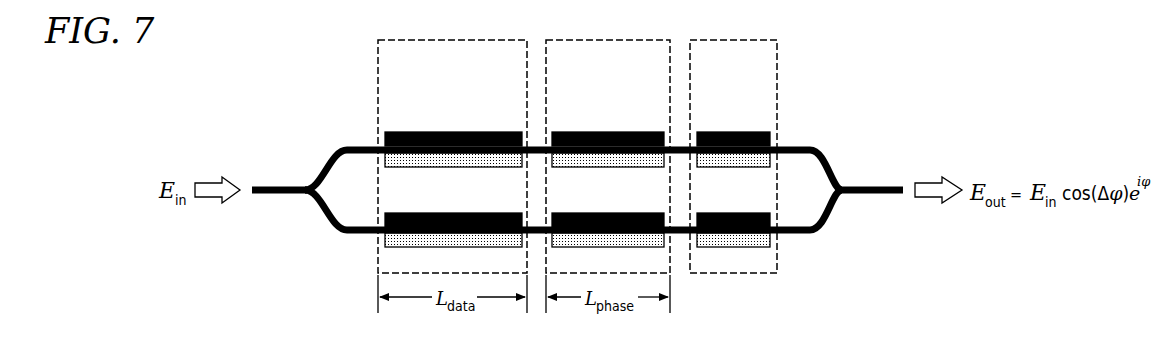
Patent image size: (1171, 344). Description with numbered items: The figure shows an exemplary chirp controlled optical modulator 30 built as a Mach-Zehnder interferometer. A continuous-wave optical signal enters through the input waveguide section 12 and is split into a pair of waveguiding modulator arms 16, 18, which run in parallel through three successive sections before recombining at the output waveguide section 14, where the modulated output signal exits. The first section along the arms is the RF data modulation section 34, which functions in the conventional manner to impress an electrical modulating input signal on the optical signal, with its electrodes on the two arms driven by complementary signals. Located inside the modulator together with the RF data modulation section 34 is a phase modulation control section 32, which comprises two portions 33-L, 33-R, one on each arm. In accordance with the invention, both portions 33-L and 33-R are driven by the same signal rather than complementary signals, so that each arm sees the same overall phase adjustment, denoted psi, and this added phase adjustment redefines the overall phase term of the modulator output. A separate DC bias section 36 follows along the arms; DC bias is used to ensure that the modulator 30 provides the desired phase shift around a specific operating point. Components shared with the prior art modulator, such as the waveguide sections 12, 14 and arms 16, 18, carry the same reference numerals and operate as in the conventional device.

The input waveguide section 12 is at (272, 186).
The output waveguide section 14 is at (880, 186).
The waveguiding modulator arm 16 is at (356, 146).
The waveguiding modulator arm 18 is at (356, 234).
The chirp controlled optical modulator 30 is at (838, 60).
The phase modulation control section 32 is at (608, 144).
The portion of phase modulation control section 33-L is at (606, 167).
The portion of phase modulation control section 33-R is at (615, 194).
The RF data modulation section 34 is at (458, 40).
The DC bias section 36 is at (733, 40).